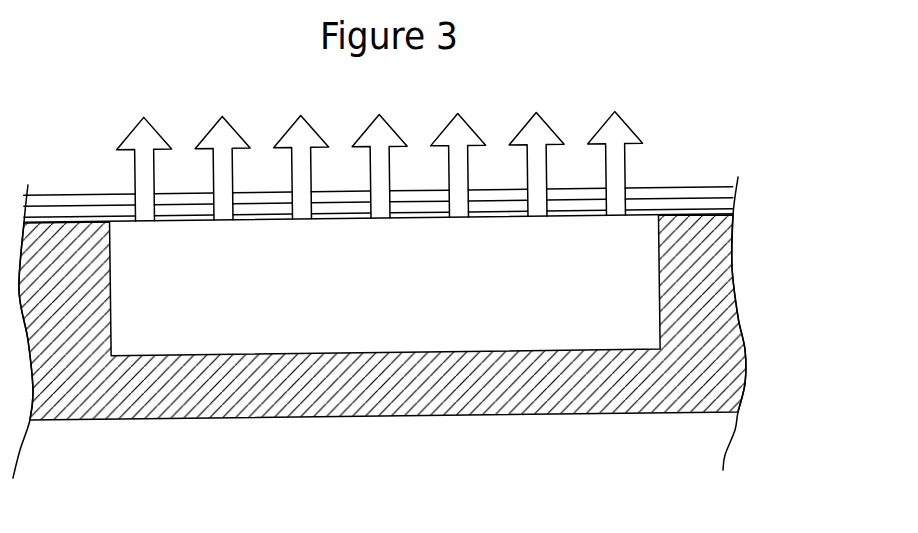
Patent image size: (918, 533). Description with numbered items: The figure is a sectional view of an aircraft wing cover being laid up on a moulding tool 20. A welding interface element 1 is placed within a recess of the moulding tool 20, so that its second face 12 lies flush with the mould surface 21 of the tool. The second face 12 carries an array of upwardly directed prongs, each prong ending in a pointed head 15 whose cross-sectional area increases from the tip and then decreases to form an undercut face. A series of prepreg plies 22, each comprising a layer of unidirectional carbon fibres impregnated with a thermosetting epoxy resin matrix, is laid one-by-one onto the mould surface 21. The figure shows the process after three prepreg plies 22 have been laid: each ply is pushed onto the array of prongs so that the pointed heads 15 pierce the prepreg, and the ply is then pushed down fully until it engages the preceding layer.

The welding interface element 1 is at (501, 106).
The second face 12 is at (186, 196).
The pointed head 15 is at (629, 128).
The moulding tool 20 is at (366, 416).
The mould surface 21 is at (57, 217).
The prepreg plies 22 is at (671, 191).